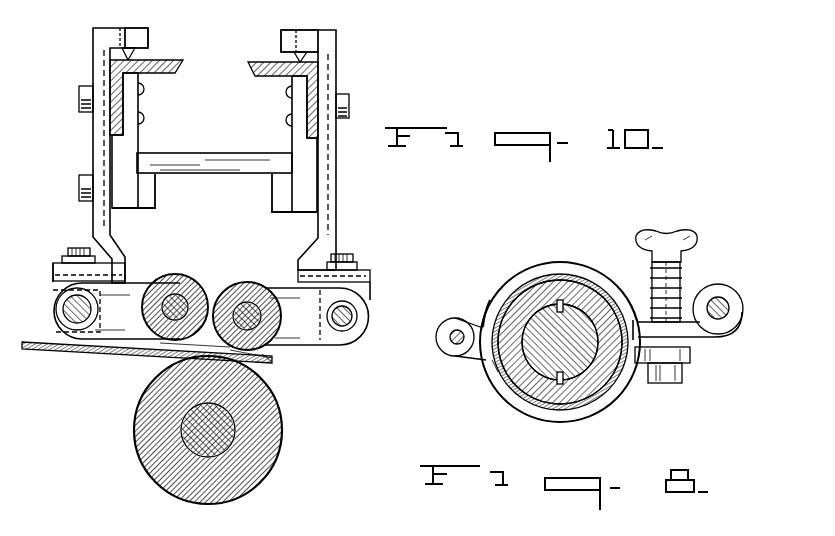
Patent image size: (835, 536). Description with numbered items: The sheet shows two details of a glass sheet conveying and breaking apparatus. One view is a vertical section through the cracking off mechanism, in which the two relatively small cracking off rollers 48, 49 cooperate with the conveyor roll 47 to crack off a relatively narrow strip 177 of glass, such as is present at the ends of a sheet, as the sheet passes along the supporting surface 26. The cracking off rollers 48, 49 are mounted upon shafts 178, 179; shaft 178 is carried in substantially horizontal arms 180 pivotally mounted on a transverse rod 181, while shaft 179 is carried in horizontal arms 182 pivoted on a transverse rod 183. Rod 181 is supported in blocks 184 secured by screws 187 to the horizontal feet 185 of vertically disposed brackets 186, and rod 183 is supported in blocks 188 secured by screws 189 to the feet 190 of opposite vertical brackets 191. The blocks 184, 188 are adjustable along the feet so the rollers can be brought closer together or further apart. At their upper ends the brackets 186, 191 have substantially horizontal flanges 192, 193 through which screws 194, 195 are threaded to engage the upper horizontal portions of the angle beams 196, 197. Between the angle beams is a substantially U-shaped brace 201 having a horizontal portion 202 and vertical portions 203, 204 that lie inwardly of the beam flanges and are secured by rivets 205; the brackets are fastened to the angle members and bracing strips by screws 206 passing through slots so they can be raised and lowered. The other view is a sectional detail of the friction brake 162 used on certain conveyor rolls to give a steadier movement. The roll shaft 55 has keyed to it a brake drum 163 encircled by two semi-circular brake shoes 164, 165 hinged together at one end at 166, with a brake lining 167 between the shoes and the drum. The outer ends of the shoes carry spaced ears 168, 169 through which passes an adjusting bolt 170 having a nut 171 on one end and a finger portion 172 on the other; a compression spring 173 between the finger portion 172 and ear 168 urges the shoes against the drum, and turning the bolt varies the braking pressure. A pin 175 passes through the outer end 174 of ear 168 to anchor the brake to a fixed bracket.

In FIG. 10, the base plate 26 is at (36, 350).
In FIG. 10, the conveyor roll 47 is at (260, 424).
In FIG. 10, the cracking off roller 48 is at (176, 274).
In FIG. 10, the cracking off roller 49 is at (247, 282).
In FIG. 8, the shaft 55 is at (540, 392).
In FIG. 8, the friction brake 162 is at (530, 257).
In FIG. 8, the brake drum 163 is at (585, 392).
In FIG. 8, the brake shoe 164 is at (492, 292).
In FIG. 8, the brake shoe 165 is at (550, 410).
In FIG. 8, the hinge 166 is at (450, 337).
In FIG. 8, the brake lining 167 is at (498, 372).
In FIG. 8, the ear 168 is at (636, 298).
In FIG. 8, the ear 169 is at (688, 360).
In FIG. 8, the adjusting bolt 170 is at (660, 343).
In FIG. 8, the nut 171 is at (672, 384).
In FIG. 8, the finger portion 172 is at (660, 235).
In FIG. 8, the compression spring 173 is at (680, 282).
In FIG. 8, the outer end of ear 174 is at (735, 296).
In FIG. 8, the pin 175 is at (726, 314).
In FIG. 10, the narrow strip 177 is at (272, 364).
In FIG. 10, the shaft 178 is at (160, 350).
In FIG. 10, the shaft 179 is at (272, 350).
In FIG. 10, the horizontal arm 180 is at (126, 288).
In FIG. 10, the transverse rod 181 is at (56, 306).
In FIG. 10, the horizontal arm 182 is at (290, 298).
In FIG. 10, the transverse rod 183 is at (362, 312).
In FIG. 10, the block 184 is at (53, 270).
In FIG. 10, the horizontal foot 185 is at (53, 262).
In FIG. 10, the vertical bracket 186 is at (93, 130).
In FIG. 10, the screw 187 is at (78, 248).
In FIG. 10, the block 188 is at (364, 292).
In FIG. 10, the screw 189 is at (340, 255).
In FIG. 10, the foot 190 is at (362, 272).
In FIG. 10, the vertical bracket 191 is at (330, 144).
In FIG. 10, the horizontal flange 192 is at (148, 36).
In FIG. 10, the horizontal flange 193 is at (281, 36).
In FIG. 10, the screw 194 is at (120, 28).
In FIG. 10, the screw 195 is at (310, 32).
In FIG. 10, the angle beam 196 is at (165, 73).
In FIG. 10, the angle beam 197 is at (252, 76).
In FIG. 10, the U-shaped brace 201 is at (208, 145).
In FIG. 10, the horizontal portion 202 is at (206, 176).
In FIG. 10, the vertical portion 203 is at (134, 148).
In FIG. 10, the vertical portion 204 is at (294, 148).
In FIG. 10, the rivet 205 is at (143, 92).
In FIG. 10, the screw 206 is at (79, 95).